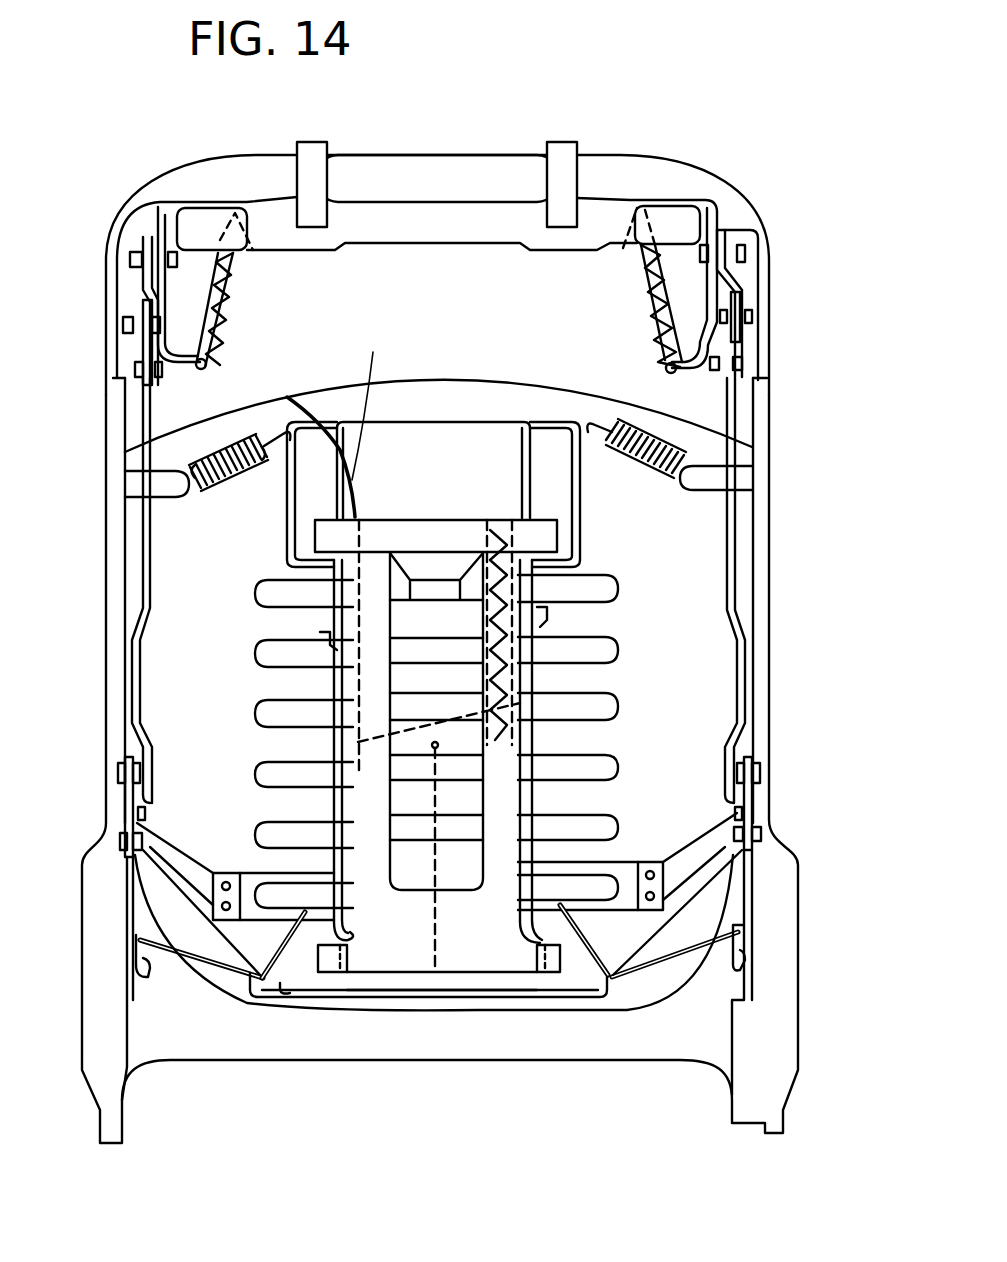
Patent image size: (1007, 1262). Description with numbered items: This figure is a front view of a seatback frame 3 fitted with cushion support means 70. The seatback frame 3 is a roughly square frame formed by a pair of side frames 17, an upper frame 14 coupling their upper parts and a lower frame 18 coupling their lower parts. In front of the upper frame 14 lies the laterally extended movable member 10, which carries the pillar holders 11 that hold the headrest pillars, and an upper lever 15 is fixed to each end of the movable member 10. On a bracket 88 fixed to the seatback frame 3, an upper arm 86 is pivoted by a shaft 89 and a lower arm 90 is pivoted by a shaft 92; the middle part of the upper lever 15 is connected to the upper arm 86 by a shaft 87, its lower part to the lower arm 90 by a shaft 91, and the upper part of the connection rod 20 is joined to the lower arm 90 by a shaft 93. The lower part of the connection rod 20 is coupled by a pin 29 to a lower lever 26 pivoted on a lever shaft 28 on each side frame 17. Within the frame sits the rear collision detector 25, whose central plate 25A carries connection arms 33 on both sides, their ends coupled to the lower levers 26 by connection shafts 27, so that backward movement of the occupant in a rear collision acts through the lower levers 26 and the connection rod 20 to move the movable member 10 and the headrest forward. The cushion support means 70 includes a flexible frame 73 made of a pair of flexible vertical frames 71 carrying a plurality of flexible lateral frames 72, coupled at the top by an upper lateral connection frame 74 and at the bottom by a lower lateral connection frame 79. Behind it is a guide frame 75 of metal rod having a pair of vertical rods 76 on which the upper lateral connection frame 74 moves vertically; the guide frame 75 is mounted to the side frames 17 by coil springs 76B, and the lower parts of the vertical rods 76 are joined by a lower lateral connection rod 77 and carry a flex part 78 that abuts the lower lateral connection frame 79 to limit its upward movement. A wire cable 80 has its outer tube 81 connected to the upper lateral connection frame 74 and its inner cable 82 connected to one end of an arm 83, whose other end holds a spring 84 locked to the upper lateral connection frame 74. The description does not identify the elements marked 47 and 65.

The seatback frame 3 is at (190, 165).
The movable member 10 is at (415, 215).
The pillar holders 11 is at (312, 147).
The upper frame 14 is at (388, 175).
The upper lever 15 is at (182, 203).
The side frames 17 is at (106, 560).
The lower frame 18 is at (547, 1033).
The connection rod 20 is at (143, 543).
The rear collision detector 25 is at (247, 870).
The central plate 25A is at (290, 860).
The lower lever 26 is at (122, 840).
The connection shafts 27 is at (118, 826).
The lever shaft 28 is at (120, 770).
The pin 29 is at (150, 810).
The connection arms 33 is at (187, 867).
The wire 47 is at (255, 652).
The cable 65 is at (433, 790).
The cushion support means 70 is at (597, 573).
The flexible vertical frames 71 is at (537, 667).
The flexible lateral frames 72 is at (255, 593).
The flexible frame 73 is at (620, 587).
The upper lateral connection frame 74 is at (423, 520).
The guide frame 75 is at (435, 420).
The vertical rods 76 is at (342, 470).
The coil springs 76B is at (210, 480).
The lower lateral connection rod 77 is at (403, 997).
The flex part 78 is at (353, 937).
The lower lateral connection frame 79 is at (478, 990).
The wire cable 80 is at (312, 404).
The outer tube 81 is at (372, 401).
The inner cable 82 is at (360, 542).
The arm 83 is at (460, 710).
The spring 84 is at (492, 542).
The upper arm 86 is at (150, 240).
The shaft 87 is at (177, 260).
The bracket 88 is at (143, 300).
The shaft 89 is at (130, 258).
The lower arm 90 is at (200, 283).
The shaft 91 is at (135, 368).
The shaft 92 is at (125, 323).
The shaft 93 is at (180, 340).